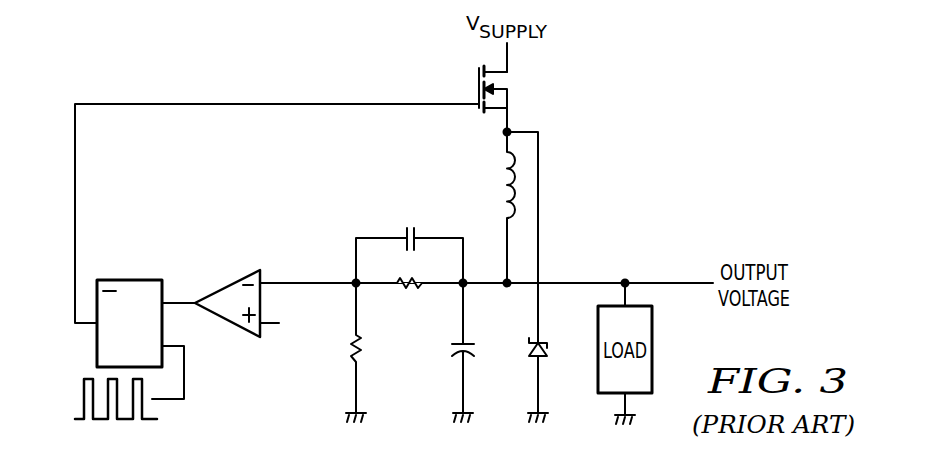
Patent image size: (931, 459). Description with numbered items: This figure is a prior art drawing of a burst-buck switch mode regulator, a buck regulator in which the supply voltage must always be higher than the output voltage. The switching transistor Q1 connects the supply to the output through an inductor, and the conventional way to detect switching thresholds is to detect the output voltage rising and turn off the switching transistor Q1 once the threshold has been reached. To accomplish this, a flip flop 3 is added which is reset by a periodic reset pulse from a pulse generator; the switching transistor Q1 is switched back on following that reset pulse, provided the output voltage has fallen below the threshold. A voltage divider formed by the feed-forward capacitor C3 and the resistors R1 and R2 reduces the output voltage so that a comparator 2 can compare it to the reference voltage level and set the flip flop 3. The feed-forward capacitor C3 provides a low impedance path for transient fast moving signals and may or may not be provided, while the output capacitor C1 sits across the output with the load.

The comparator 2 is at (229, 285).
The flip flop 3 is at (131, 280).
The switching transistor Q1 is at (508, 99).
The resistor R1 is at (369, 352).
The resistor R2 is at (410, 293).
The output capacitor C1 is at (449, 352).
The feed-forward capacitor C3 is at (409, 249).